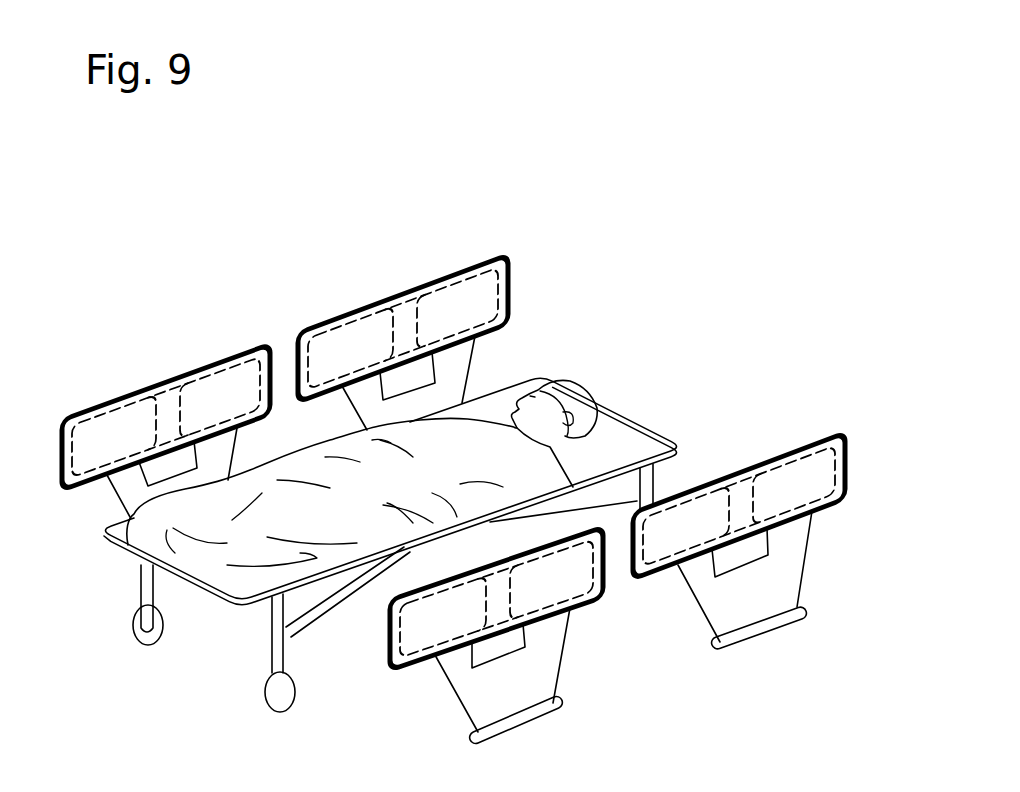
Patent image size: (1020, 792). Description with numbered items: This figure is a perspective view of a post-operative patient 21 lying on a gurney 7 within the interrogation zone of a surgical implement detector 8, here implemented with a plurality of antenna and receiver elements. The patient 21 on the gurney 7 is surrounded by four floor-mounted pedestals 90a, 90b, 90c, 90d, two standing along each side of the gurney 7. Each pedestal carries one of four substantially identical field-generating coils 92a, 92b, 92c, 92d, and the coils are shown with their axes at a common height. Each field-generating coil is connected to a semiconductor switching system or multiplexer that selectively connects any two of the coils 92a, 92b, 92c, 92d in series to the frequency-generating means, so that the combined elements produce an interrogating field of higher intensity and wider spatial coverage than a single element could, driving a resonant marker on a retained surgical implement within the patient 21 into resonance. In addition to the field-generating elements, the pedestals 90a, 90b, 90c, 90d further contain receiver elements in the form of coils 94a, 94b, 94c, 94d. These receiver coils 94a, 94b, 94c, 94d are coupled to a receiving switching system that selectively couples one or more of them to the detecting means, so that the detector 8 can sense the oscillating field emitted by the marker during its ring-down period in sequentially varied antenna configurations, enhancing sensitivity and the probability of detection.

The gurney 7 is at (658, 428).
The surgical implement detector 8 is at (782, 170).
The patient 21 is at (597, 400).
The floor-mounted pedestal 90a is at (772, 574).
The floor-mounted pedestal 90b is at (460, 705).
The floor-mounted pedestal 90c is at (510, 286).
The floor-mounted pedestal 90d is at (163, 378).
The field-generating coil 92a is at (826, 504).
The field-generating coil 92b is at (585, 600).
The field-generating coil 92c is at (438, 287).
The field-generating coil 92d is at (256, 347).
The receiver coil 94a is at (741, 505).
The receiver coil 94b is at (498, 598).
The receiver coil 94c is at (405, 328).
The receiver coil 94d is at (168, 416).